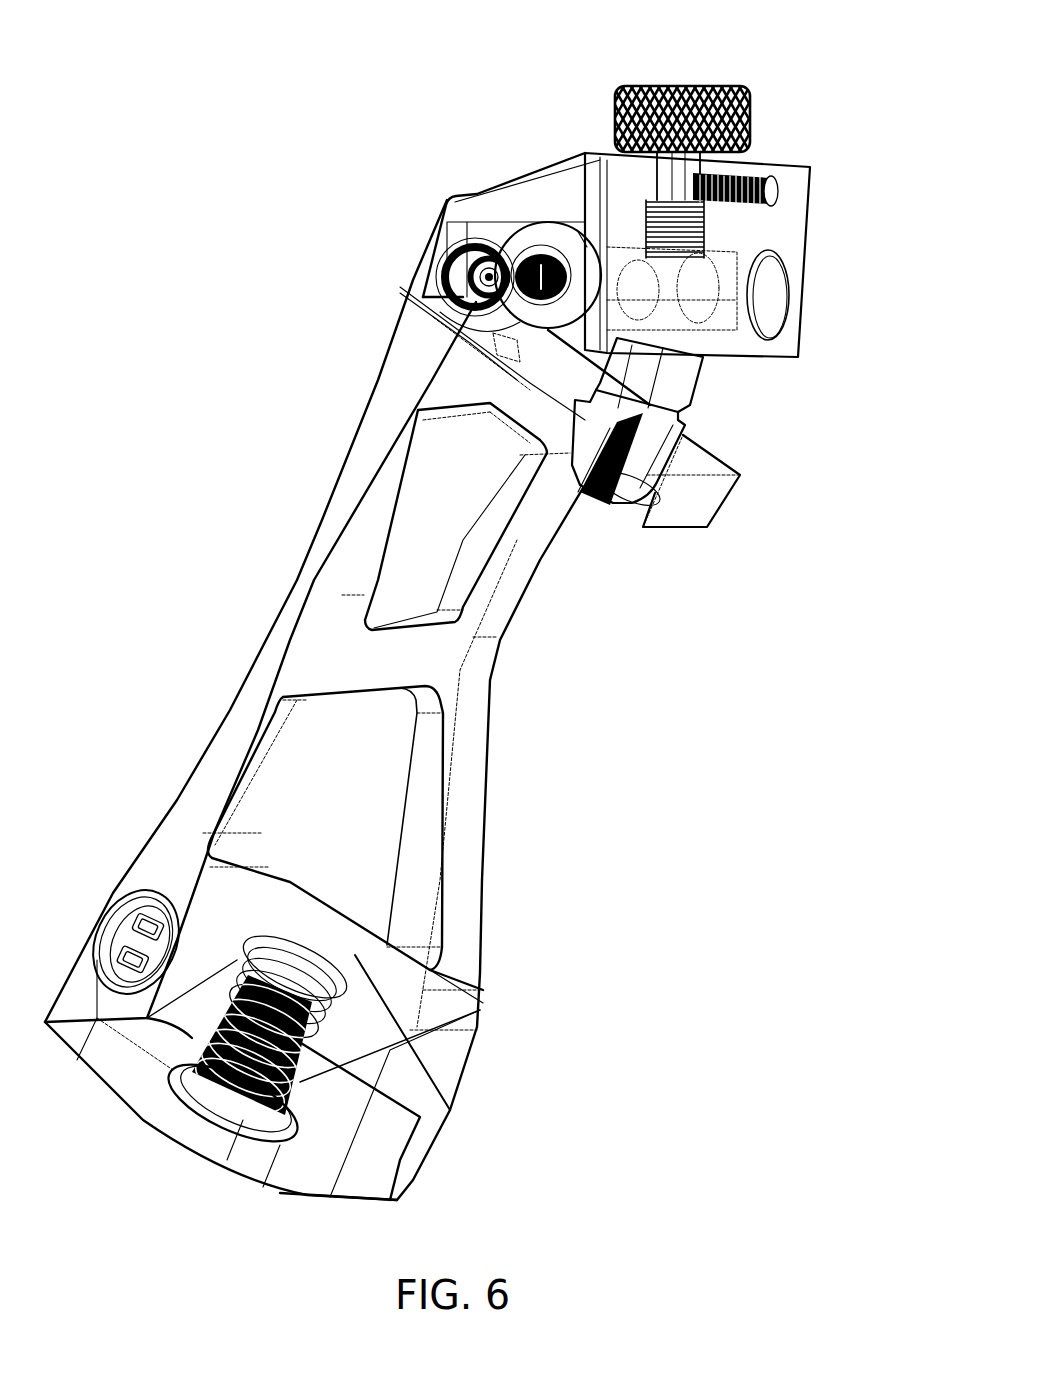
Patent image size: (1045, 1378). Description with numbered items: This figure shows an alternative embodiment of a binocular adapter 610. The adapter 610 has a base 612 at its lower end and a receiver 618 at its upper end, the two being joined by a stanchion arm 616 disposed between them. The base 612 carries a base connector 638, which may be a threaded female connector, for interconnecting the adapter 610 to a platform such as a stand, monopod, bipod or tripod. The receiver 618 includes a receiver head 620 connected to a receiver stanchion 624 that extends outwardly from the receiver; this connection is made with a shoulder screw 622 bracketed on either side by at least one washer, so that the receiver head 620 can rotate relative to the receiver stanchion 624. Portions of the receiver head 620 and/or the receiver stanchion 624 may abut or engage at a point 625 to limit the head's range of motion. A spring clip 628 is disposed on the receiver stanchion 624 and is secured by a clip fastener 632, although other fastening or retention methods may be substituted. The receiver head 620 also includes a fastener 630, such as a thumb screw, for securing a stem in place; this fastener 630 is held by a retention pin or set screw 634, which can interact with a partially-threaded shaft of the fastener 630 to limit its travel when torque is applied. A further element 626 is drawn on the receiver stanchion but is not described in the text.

The binocular adapter 610 is at (840, 52).
The base 612 is at (103, 903).
The stanchion arm 616 is at (297, 572).
The receiver 618 is at (486, 150).
The receiver head 620 is at (588, 150).
The shoulder screw 622 is at (522, 248).
The receiver stanchion 624 is at (727, 500).
The point 625 is at (430, 270).
The nut 626 is at (735, 362).
The spring clip 628 is at (693, 387).
The fastener 630 is at (700, 88).
The clip fastener 632 is at (595, 510).
The set screw 634 is at (780, 203).
The base connector 638 is at (187, 1093).